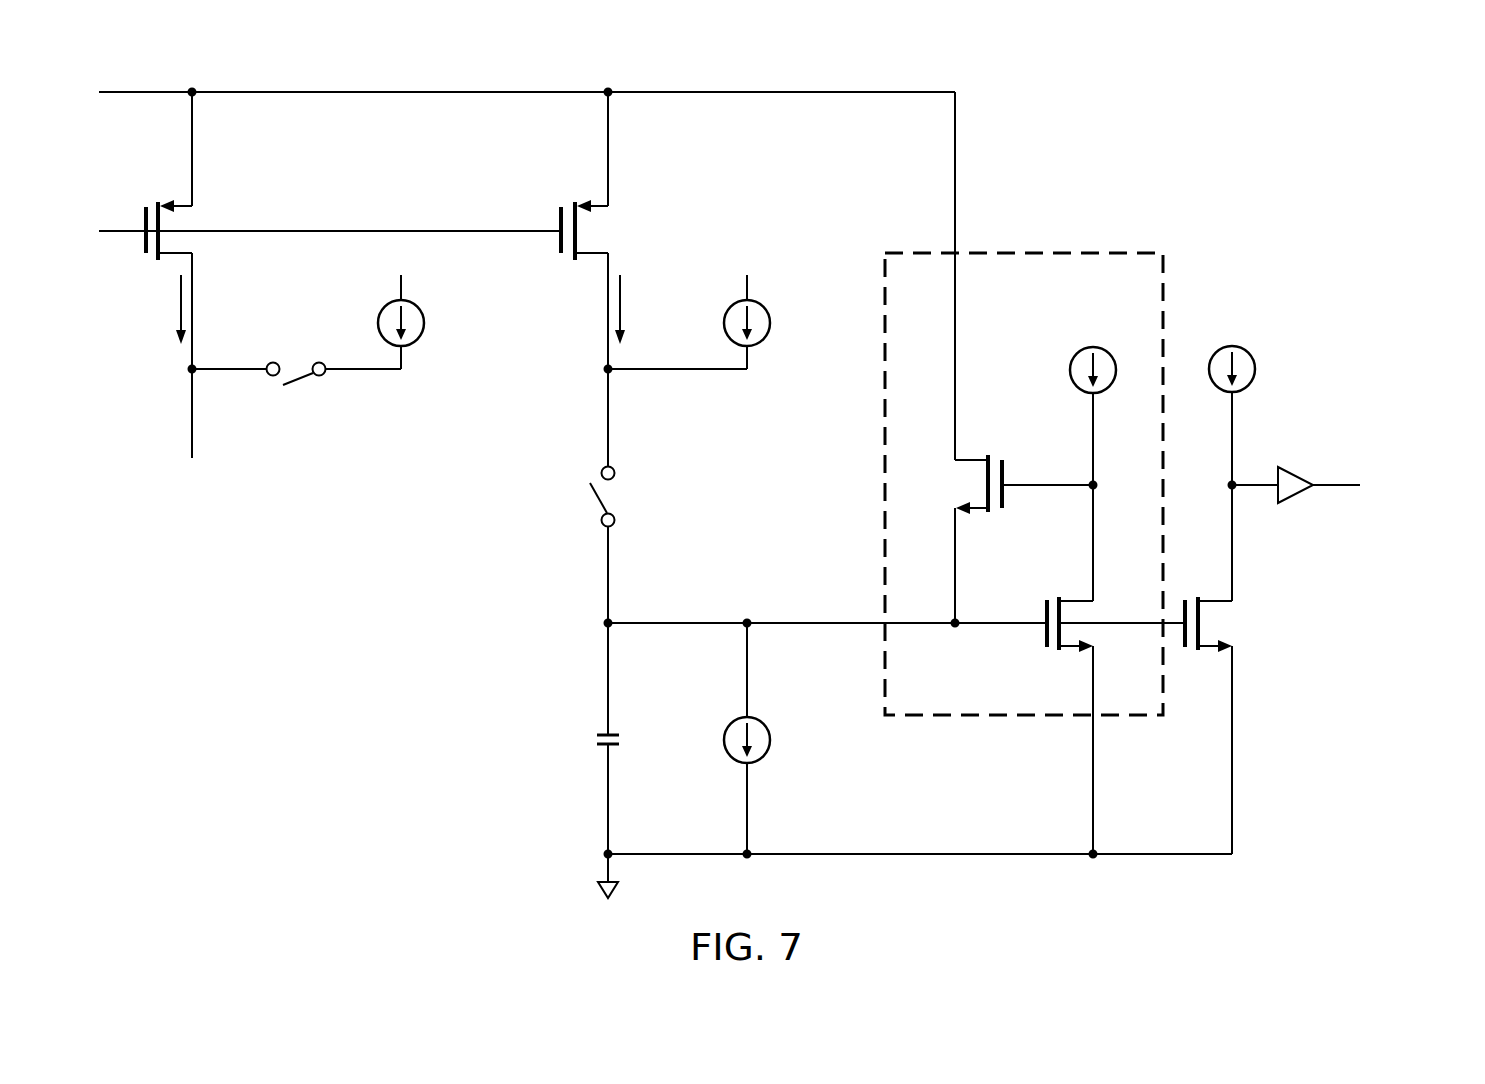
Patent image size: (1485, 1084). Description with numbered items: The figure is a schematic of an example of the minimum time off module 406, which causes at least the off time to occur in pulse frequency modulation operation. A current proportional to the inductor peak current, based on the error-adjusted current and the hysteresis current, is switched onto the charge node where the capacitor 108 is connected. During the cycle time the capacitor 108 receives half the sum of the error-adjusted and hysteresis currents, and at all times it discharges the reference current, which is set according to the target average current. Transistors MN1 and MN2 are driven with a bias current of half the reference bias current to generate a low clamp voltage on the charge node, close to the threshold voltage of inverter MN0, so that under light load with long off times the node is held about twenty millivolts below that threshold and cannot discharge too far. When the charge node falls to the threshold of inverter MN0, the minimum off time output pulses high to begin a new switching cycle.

The capacitor 108 is at (597, 738).
The minimum time off module 406 is at (1058, 95).
The inverter MN0 is at (1228, 725).
The transistor MN1 is at (1095, 725).
The transistor MN2 is at (1006, 357).